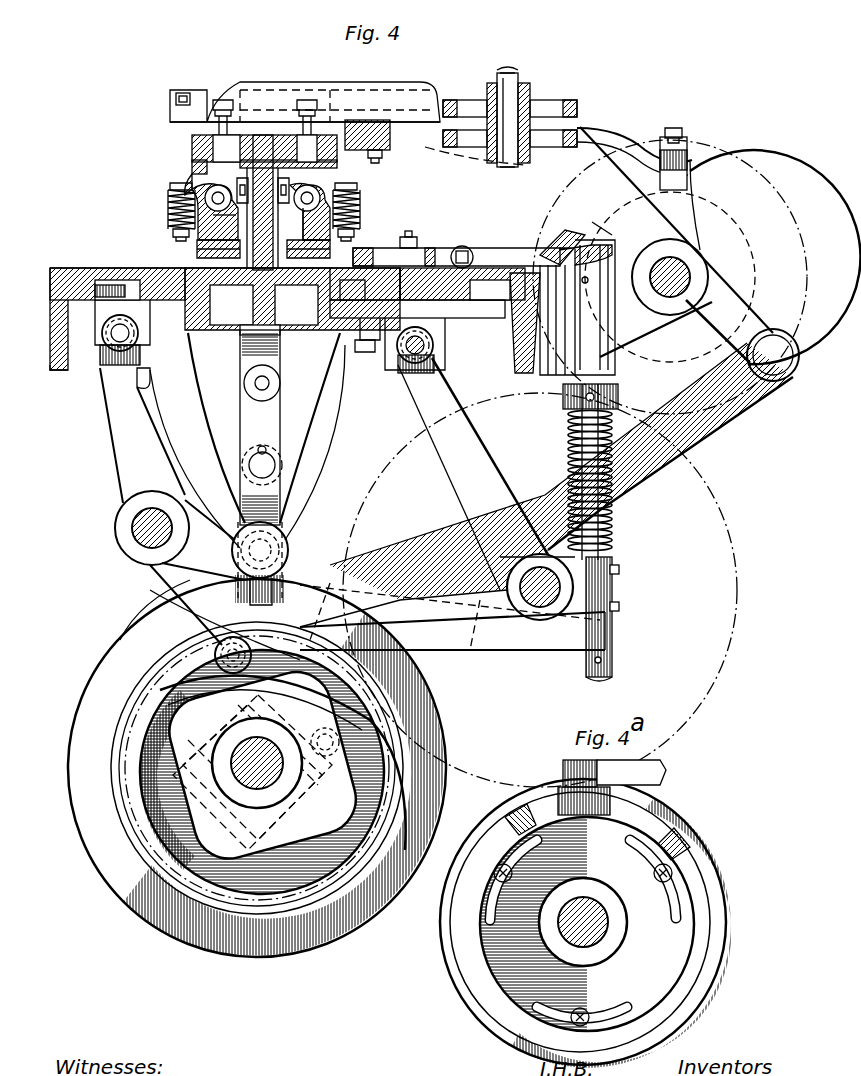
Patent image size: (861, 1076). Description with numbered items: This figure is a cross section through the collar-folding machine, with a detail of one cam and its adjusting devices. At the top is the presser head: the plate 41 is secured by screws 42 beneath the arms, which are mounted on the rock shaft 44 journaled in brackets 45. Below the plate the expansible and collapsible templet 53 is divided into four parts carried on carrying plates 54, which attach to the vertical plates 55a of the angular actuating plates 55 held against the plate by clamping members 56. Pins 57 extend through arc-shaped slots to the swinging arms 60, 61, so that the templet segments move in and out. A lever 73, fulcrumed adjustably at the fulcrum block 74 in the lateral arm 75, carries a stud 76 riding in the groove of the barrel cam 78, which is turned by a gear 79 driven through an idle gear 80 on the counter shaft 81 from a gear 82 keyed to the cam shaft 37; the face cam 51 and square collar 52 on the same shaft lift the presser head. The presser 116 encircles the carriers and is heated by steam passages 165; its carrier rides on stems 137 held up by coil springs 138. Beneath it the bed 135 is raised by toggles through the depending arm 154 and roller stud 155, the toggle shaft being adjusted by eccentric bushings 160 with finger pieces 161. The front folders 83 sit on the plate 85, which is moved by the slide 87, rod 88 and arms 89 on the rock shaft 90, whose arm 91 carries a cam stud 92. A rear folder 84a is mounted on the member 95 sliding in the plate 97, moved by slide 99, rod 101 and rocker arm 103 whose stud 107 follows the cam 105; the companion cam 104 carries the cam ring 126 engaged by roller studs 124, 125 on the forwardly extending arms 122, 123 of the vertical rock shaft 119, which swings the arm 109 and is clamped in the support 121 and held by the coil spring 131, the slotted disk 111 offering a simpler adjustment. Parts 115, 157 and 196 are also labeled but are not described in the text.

In FIG. 4, the cam shaft 37 is at (290, 790).
In FIG. 4, the plate 41 is at (192, 140).
In FIG. 4, the screws 42 is at (225, 100).
In FIG. 4, the rock shaft 44 is at (685, 265).
In FIG. 4, the brackets 45 is at (655, 330).
In FIG. 4, the face cam 51 is at (252, 957).
In FIG. 4, the square collar 52 is at (218, 735).
In FIG. 4, the die or templet 53 is at (292, 301).
In FIG. 4, the carrying plates 54 is at (250, 252).
In FIG. 4, the actuating members or plates 55 is at (195, 186).
In FIG. 4, the vertical plates 55a is at (238, 221).
In FIG. 4, the clamping members 56 is at (200, 170).
In FIG. 4, the pins 57 is at (270, 135).
In FIG. 4, the swinging arm 60 is at (195, 124).
In FIG. 4, the arms or levers 61 is at (390, 135).
In FIG. 4, the lever 73 is at (600, 150).
In FIG. 4, the fulcrum block 74 is at (505, 73).
In FIG. 4, the arm 75 is at (578, 106).
In FIG. 4, the stud 76 is at (678, 132).
In FIG. 4, the barrel cam 78 is at (715, 185).
In FIG. 4, the gear 79 is at (808, 210).
In FIG. 4, the idle gear 80 is at (733, 542).
In FIG. 4, the counter shaft 81 is at (540, 618).
In FIG. 4, the gear 82 is at (340, 880).
In FIG. 4, the front folder blades 83 is at (140, 268).
In FIG. 4, the rear folder blade 84a is at (345, 270).
In FIG. 4, the plate 85 is at (100, 290).
In FIG. 4, the slide 87 is at (80, 290).
In FIG. 4, the rod 88 is at (108, 348).
In FIG. 4, the actuating arms 89 is at (118, 442).
In FIG. 4, the rock shaft 90 is at (130, 526).
In FIG. 4, the arm 91 is at (197, 572).
In FIG. 4, the stud 92 is at (410, 710).
In FIG. 4, the member 95 is at (432, 248).
In FIG. 4, the plate 97 is at (445, 330).
In FIG. 4, the slide 99 is at (490, 318).
In FIG. 4, the rod 101 is at (405, 370).
In FIG. 4, the rocker arm 103 is at (455, 495).
In FIG. 4A, the cam 104 is at (727, 960).
In FIG. 4, the cam 105 is at (185, 850).
In FIG. 4, the stud 107 is at (215, 648).
In FIG. 4, the arm 109 is at (525, 258).
In FIG. 4, the slotted disk 111 is at (470, 250).
In FIG. 4, the stud 115 is at (408, 236).
In FIG. 4, the presser 116 is at (215, 266).
In FIG. 4, the vertical rock shaft 119 is at (585, 400).
In FIG. 4, the support 121 is at (617, 592).
In FIG. 4A, the forwardly extending arm 122 is at (666, 775).
In FIG. 4, the forwardly extending arm 123 is at (505, 650).
In FIG. 4A, the roller stud 124 is at (612, 800).
In FIG. 4, the roller stud 125 is at (185, 598).
In FIG. 4A, the cam ring 126 is at (695, 860).
In FIG. 4, the coil spring 131 is at (615, 528).
In FIG. 4, the bed 135 is at (302, 350).
In FIG. 4, the stems 137 is at (168, 195).
In FIG. 4, the coil springs 138 is at (168, 212).
In FIG. 4, the depending arm 154 is at (290, 560).
In FIG. 4, the roller stud 155 is at (400, 770).
In FIG. 4, the bar 157 is at (270, 418).
In FIG. 4, the eccentric bearing bushings 160 is at (290, 540).
In FIG. 4, the finger pieces 161 is at (360, 565).
In FIG. 4, the steam passages 165 is at (200, 240).
In FIG. 4, the block 196 is at (371, 245).